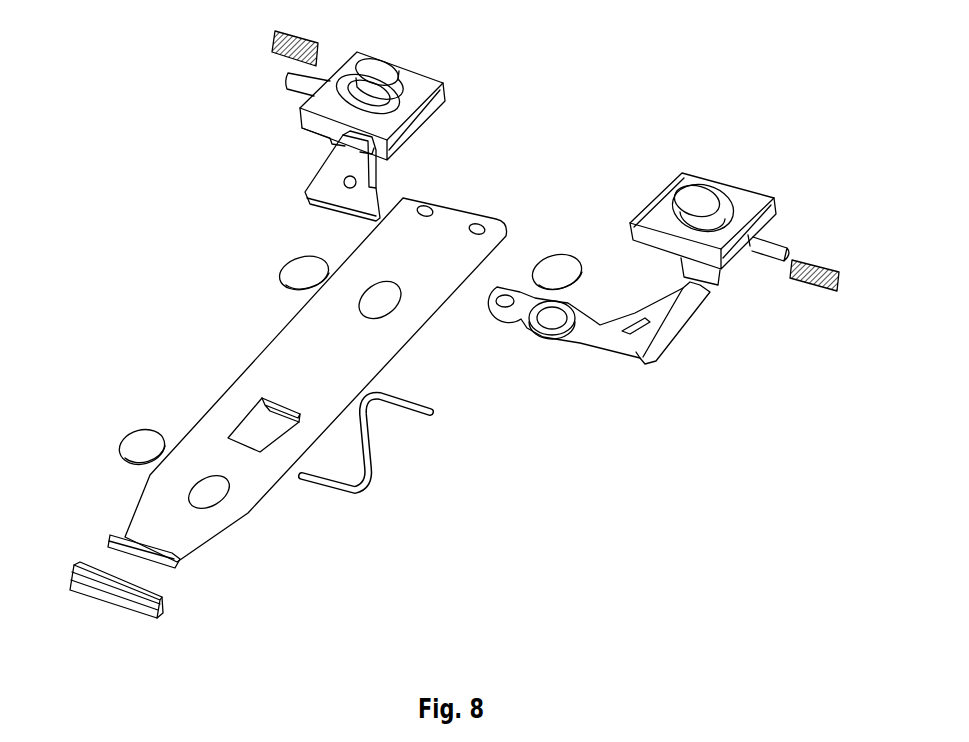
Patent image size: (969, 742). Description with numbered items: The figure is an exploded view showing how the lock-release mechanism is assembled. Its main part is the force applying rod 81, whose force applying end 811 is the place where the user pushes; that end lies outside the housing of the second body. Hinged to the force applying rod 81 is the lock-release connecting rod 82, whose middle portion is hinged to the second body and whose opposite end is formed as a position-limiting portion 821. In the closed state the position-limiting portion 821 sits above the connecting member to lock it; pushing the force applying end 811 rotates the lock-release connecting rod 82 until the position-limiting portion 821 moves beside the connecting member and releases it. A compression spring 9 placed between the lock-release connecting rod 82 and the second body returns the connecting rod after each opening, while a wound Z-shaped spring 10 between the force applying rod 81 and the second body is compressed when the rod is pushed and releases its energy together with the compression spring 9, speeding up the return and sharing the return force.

The compression spring 9 is at (318, 43).
The Z-shaped spring 10 is at (402, 543).
The force applying rod 81 is at (278, 543).
The force applying end 811 is at (82, 646).
The lock-release connecting rod 82 is at (298, 238).
The position-limiting portion 821 is at (443, 62).